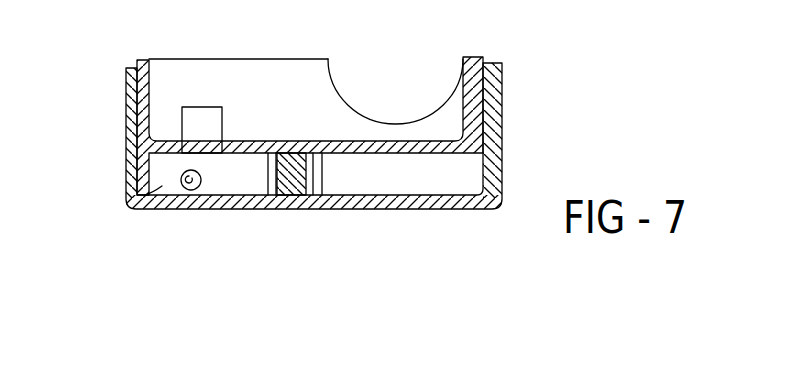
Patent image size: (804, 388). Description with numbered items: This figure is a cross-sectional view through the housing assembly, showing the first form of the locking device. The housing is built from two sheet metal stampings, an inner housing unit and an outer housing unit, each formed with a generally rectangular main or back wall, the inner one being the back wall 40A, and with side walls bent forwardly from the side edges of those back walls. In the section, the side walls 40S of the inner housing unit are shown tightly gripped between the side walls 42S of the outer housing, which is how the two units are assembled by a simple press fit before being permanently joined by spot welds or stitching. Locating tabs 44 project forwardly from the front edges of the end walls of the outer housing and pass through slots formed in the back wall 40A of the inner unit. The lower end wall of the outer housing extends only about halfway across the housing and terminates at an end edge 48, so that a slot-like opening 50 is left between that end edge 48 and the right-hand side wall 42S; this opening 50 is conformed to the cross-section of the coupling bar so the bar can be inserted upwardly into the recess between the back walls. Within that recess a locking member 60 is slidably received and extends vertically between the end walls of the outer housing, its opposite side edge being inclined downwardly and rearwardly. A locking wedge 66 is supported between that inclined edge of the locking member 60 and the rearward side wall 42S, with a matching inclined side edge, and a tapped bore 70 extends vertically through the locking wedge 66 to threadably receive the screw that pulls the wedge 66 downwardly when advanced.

The side walls of inner housing unit 40S is at (150, 87).
The side walls of outer housing 42S is at (126, 107).
The main or back wall of inner housing unit 40A is at (320, 137).
The locating tabs 44 is at (205, 127).
The end edge 48 is at (323, 178).
The slot-like opening 50 is at (433, 189).
The tapped bore 70 is at (181, 178).
The locking wedge 66 is at (127, 196).
The locking member 60 is at (278, 200).